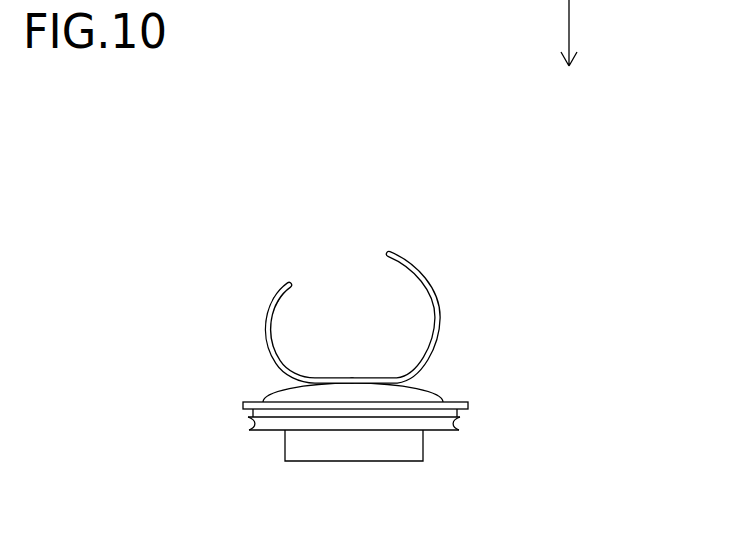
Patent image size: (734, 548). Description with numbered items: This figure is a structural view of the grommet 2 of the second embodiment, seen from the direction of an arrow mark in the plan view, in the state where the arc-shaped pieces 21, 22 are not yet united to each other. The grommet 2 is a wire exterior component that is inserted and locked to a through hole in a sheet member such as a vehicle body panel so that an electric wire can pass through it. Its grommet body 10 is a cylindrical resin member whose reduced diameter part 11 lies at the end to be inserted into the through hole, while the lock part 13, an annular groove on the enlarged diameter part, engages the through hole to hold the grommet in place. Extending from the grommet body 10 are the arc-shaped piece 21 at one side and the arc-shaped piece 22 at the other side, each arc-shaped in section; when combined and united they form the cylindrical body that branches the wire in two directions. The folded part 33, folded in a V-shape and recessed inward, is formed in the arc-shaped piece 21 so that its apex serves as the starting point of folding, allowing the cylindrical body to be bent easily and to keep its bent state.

The grommet 2 is at (371, 273).
The grommet body 10 is at (585, 33).
The reduced diameter part 11 is at (292, 449).
The lock part 13 is at (460, 413).
The arc-shaped piece 21 is at (253, 338).
The arc-shaped piece 22 is at (440, 313).
The folded part 33 is at (257, 313).